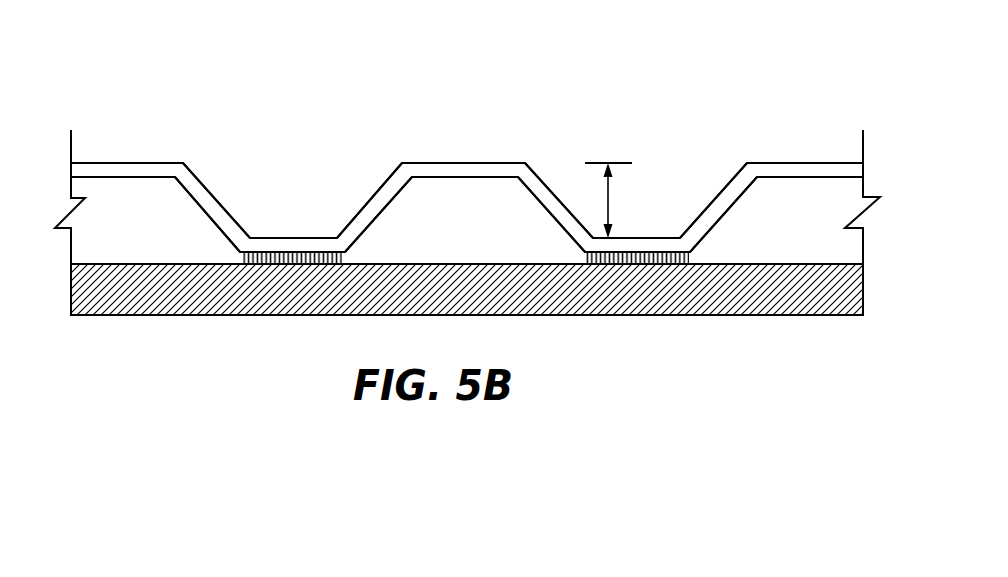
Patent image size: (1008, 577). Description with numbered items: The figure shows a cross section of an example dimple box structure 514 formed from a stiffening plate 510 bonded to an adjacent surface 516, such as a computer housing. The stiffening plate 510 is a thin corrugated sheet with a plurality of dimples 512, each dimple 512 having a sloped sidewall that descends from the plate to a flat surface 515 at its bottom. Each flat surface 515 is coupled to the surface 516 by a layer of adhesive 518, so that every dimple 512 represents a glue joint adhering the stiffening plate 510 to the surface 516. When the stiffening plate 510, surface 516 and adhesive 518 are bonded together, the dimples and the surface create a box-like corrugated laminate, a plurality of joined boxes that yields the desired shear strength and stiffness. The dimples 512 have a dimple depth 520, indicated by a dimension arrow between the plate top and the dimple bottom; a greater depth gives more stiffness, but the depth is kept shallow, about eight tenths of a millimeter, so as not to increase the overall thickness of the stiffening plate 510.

The stiffening plate 510 is at (123, 163).
The dimples 512 is at (373, 200).
The dimple box structure 514 is at (620, 92).
The flat surfaces 515 is at (307, 240).
The surface 516 is at (622, 297).
The adhesive 518 is at (260, 260).
The dimple depth 520 is at (608, 197).